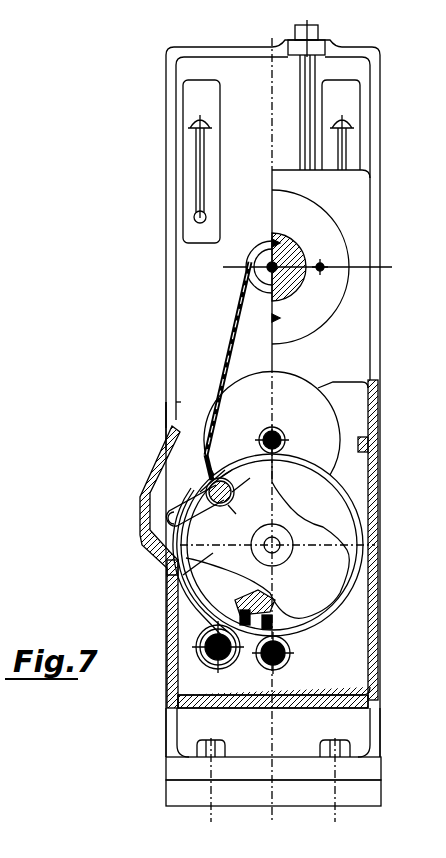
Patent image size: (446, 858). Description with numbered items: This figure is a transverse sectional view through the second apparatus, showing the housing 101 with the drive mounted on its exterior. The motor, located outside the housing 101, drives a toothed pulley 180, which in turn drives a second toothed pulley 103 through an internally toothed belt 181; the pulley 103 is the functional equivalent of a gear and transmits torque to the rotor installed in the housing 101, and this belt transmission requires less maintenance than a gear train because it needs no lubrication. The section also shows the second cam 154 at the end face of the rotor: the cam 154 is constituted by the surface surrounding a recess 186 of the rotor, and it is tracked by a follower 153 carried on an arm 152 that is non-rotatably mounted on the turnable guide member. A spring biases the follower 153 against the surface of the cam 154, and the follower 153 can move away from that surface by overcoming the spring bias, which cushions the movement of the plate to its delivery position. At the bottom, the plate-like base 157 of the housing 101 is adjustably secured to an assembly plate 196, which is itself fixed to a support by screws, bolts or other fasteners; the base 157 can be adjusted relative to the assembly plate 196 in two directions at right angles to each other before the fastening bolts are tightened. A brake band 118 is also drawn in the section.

The housing 101 is at (168, 655).
The second toothed pulley 103 is at (216, 393).
The brake band 118 is at (215, 592).
The arm 152 is at (163, 480).
The follower 153 is at (160, 465).
The second cam 154 is at (200, 406).
The plate-like base 157 is at (178, 767).
The toothed pulley 180 is at (247, 288).
The internally toothed belt 181 is at (230, 328).
The recess 186 is at (170, 563).
The assembly plate 196 is at (182, 796).